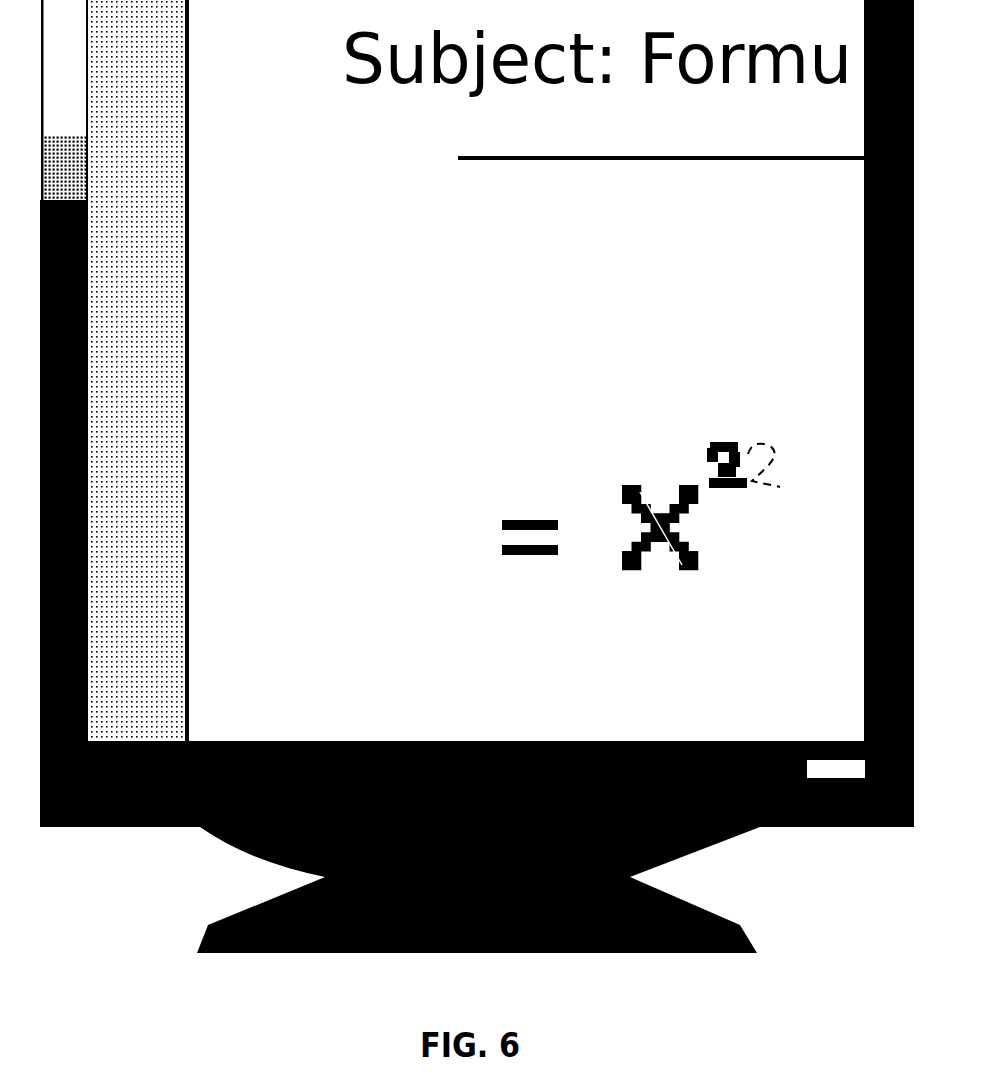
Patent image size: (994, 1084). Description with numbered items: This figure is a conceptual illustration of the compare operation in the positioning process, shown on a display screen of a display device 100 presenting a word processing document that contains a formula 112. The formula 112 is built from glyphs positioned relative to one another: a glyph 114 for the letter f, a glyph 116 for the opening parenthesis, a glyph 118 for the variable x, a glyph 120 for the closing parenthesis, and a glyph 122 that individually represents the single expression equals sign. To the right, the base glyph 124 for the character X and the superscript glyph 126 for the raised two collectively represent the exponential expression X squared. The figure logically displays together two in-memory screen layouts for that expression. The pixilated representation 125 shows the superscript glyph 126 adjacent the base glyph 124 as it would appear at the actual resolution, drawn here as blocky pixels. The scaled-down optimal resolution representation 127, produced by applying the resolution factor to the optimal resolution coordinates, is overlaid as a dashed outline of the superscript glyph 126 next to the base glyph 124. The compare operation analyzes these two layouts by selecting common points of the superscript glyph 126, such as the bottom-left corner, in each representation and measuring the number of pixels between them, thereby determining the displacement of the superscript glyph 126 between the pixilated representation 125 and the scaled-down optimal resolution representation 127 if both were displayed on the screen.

The display device / monitor 100 is at (133, 828).
The formula 112 is at (248, 508).
The glyph 114 is at (291, 578).
The glyph 116 is at (342, 494).
The glyph 118 is at (366, 517).
The glyph 120 is at (433, 591).
The glyph 122 is at (537, 557).
The base glyph 124 is at (632, 486).
The pixilated representation 125 is at (695, 424).
The superscript glyph 126 is at (737, 443).
The scaled-down optimal resolution representation 127 is at (668, 462).